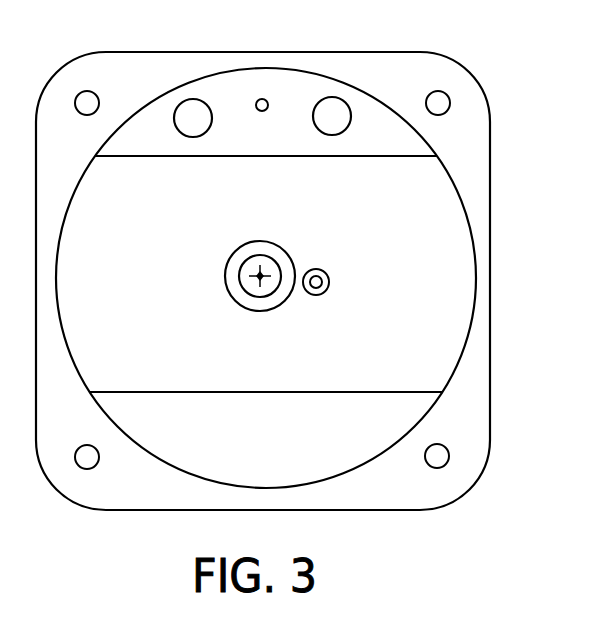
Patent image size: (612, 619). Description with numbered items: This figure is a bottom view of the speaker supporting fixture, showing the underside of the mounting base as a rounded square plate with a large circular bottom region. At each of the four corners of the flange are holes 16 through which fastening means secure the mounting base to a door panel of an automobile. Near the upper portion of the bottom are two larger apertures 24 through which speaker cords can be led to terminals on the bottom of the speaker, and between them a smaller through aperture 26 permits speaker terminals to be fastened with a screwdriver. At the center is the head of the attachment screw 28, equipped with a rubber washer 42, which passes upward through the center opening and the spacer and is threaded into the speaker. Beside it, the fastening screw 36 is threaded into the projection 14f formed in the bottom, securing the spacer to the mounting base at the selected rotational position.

The holes 16 is at (442, 93).
The apertures 24 is at (192, 107).
The through aperture 26 is at (262, 100).
The attachment screw 28 is at (269, 264).
The rubber washer 42 is at (277, 298).
The fastening screw 36 is at (327, 280).
The projection 14f is at (328, 291).